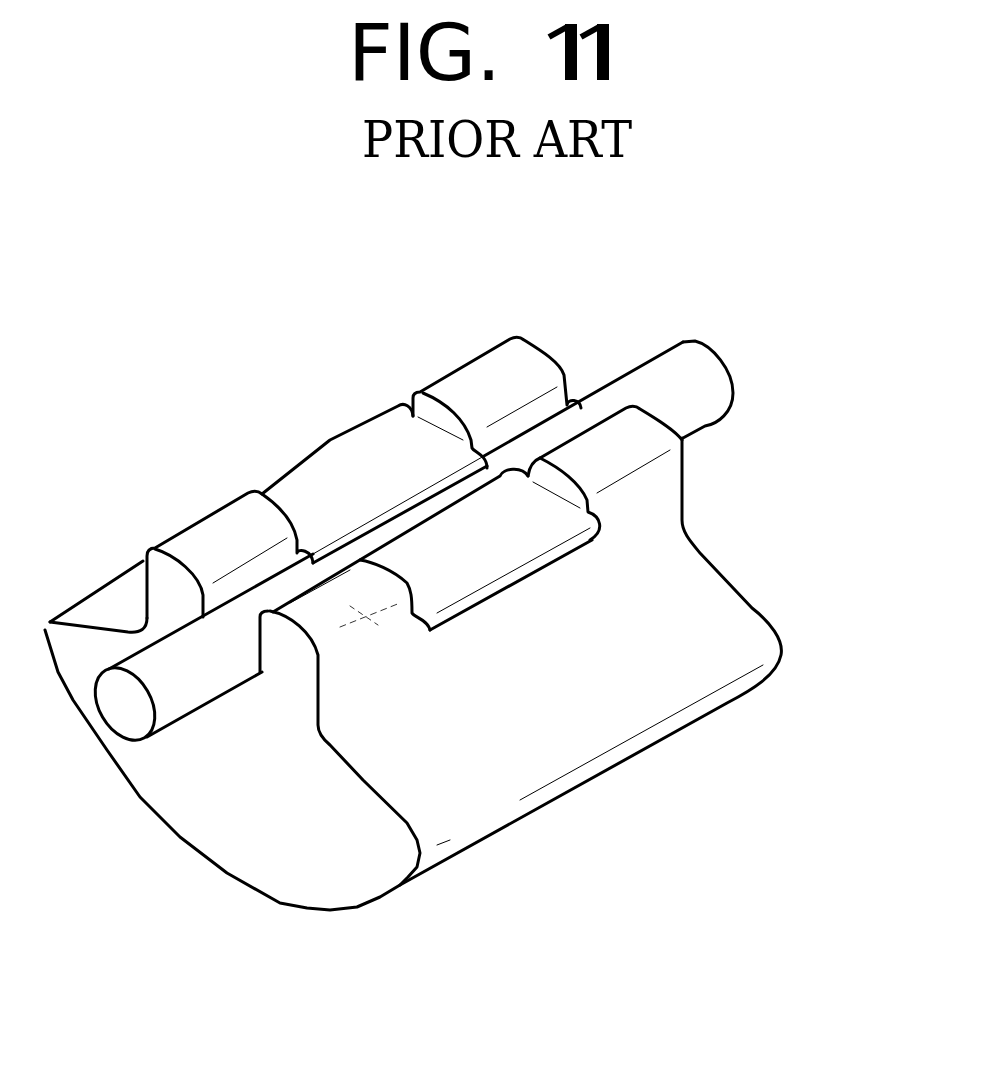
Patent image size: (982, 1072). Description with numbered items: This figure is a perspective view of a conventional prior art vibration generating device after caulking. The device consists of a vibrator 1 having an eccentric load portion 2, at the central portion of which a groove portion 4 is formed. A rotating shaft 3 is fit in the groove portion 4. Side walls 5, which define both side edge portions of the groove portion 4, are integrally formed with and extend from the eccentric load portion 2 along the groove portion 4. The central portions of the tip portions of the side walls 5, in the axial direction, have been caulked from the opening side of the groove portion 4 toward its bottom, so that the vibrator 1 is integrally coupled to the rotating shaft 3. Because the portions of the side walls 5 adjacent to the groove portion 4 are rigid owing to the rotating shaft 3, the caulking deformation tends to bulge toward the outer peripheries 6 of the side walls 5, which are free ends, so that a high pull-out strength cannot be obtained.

The vibrator 1 is at (470, 637).
The eccentric load portion 2 is at (257, 877).
The rotating shaft 3 is at (650, 377).
The groove portion 4 is at (257, 668).
The side walls 5 is at (180, 538).
The outer peripheries 6 is at (440, 375).